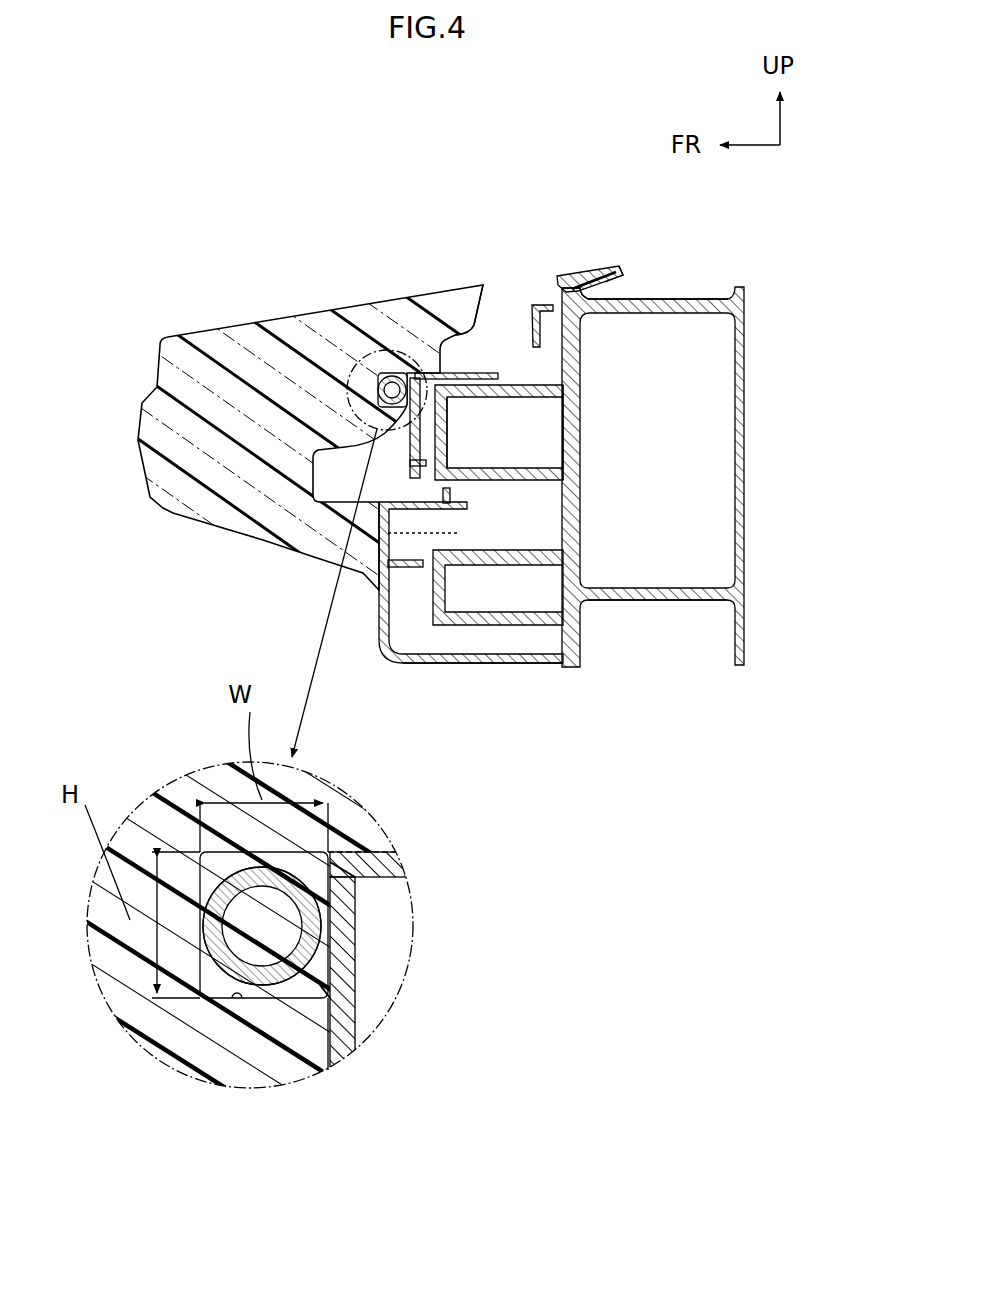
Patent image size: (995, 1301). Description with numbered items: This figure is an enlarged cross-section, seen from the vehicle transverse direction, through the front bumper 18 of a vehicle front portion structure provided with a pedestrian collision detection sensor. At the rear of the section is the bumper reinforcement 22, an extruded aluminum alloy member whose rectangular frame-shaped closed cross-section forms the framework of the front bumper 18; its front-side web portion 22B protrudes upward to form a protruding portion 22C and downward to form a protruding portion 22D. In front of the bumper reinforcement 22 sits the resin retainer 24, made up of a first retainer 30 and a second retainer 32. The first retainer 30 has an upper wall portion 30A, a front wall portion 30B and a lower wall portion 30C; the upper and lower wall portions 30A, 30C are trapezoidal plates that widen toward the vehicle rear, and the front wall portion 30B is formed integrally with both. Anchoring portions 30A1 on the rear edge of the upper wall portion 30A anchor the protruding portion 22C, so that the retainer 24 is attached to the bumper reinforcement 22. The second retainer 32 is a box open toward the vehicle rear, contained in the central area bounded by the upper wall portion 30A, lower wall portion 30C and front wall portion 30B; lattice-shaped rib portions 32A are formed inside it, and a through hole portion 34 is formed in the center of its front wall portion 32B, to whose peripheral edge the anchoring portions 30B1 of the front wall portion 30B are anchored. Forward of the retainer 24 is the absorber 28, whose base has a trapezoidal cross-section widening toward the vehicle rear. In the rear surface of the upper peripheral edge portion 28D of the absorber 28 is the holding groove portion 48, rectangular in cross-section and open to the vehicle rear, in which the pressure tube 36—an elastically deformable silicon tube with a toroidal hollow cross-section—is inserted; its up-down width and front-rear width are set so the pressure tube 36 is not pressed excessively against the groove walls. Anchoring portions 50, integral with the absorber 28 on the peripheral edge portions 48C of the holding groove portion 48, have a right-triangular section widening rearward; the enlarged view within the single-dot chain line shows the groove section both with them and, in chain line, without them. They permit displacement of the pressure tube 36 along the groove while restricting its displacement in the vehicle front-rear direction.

The front bumper 18 is at (387, 190).
The bumper reinforcement 22 is at (748, 350).
The web portion 22B is at (583, 363).
The protruding portion 22C is at (562, 290).
The protruding portion 22D is at (577, 637).
The retainer 24 is at (517, 220).
The absorber 28 is at (198, 330).
The peripheral edge portion 28D is at (356, 308).
The first retainer 30 is at (573, 268).
The upper wall portion 30A is at (472, 367).
The anchoring portion 30A1 is at (623, 270).
The front wall portion 30B is at (372, 613).
The anchoring portion 30B1 is at (463, 503).
The lower wall portion 30C is at (493, 660).
The second retainer 32 is at (527, 402).
The rib portion 32A is at (565, 557).
The front wall portion 32B is at (450, 442).
The through hole portion 34 is at (445, 550).
The pressure tube 36 is at (375, 383).
The holding groove portion 48 is at (233, 1000).
The peripheral edge portion 48C is at (325, 845).
The anchoring portion 50 is at (374, 881).